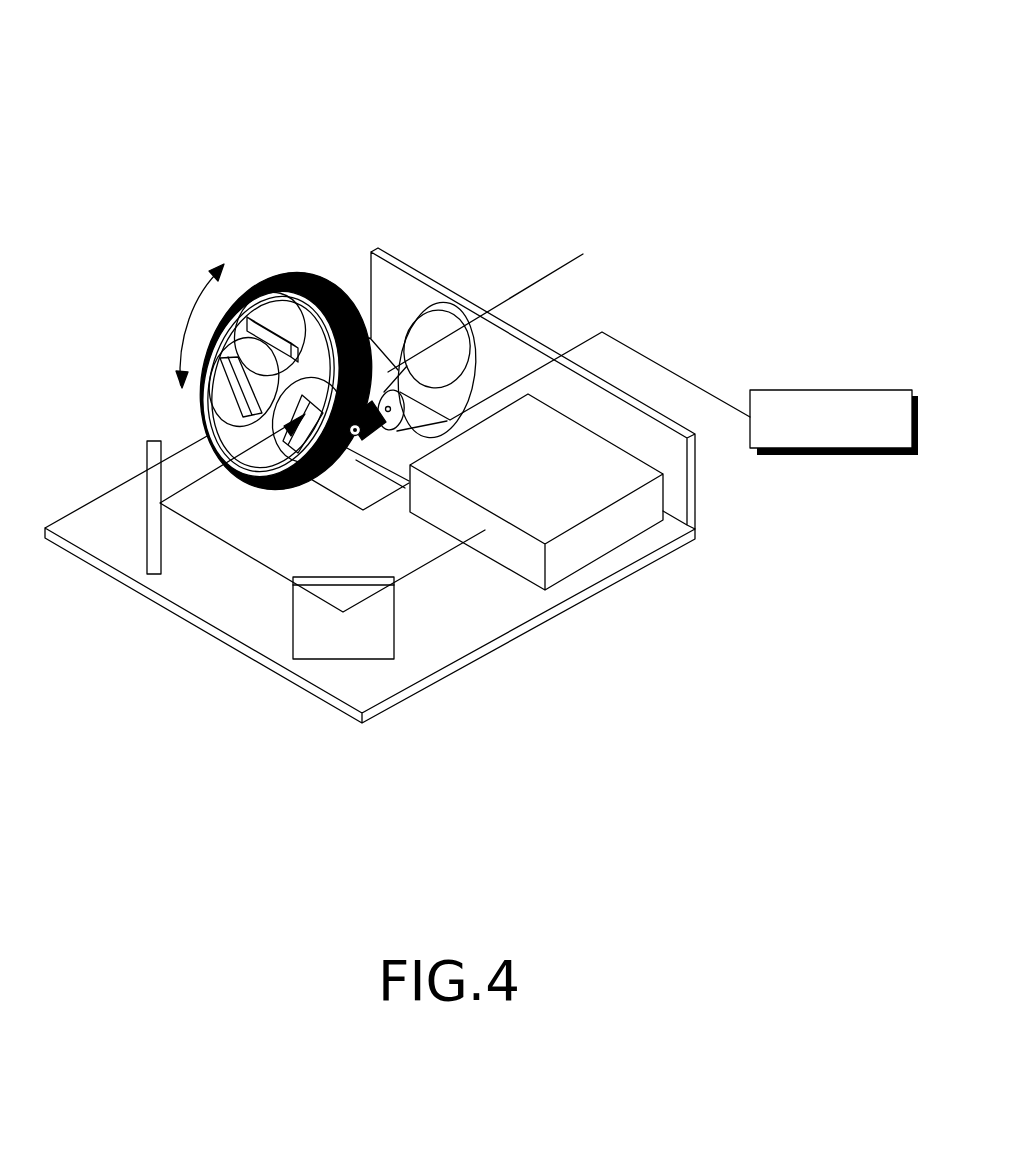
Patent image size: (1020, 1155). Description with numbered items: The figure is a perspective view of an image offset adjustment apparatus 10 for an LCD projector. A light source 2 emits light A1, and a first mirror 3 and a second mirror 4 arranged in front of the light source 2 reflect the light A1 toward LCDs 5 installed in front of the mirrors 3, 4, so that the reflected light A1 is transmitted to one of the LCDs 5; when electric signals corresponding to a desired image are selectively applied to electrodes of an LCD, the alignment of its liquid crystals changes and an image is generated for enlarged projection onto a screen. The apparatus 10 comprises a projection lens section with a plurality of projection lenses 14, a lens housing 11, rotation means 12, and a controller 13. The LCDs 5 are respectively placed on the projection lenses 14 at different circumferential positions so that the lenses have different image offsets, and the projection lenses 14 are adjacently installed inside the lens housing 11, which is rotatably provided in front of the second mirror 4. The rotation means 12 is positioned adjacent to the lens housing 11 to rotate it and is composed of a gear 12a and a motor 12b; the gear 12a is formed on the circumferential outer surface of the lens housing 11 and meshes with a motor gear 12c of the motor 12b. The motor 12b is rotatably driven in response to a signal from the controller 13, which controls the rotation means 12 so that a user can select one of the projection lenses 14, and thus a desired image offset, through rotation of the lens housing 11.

The image offset adjustment apparatus 10 is at (606, 130).
The light source 2 is at (603, 538).
The first mirror 3 is at (338, 643).
The second mirror 4 is at (152, 545).
The LCDs 5 is at (306, 416).
The lens housing 11 is at (220, 320).
The rotation means 12 is at (391, 255).
The gear 12a is at (292, 277).
The motor 12b is at (403, 387).
The motor gear 12c is at (437, 390).
The controller 13 is at (828, 389).
The projection lenses 14 is at (258, 297).
The light A1 is at (417, 572).